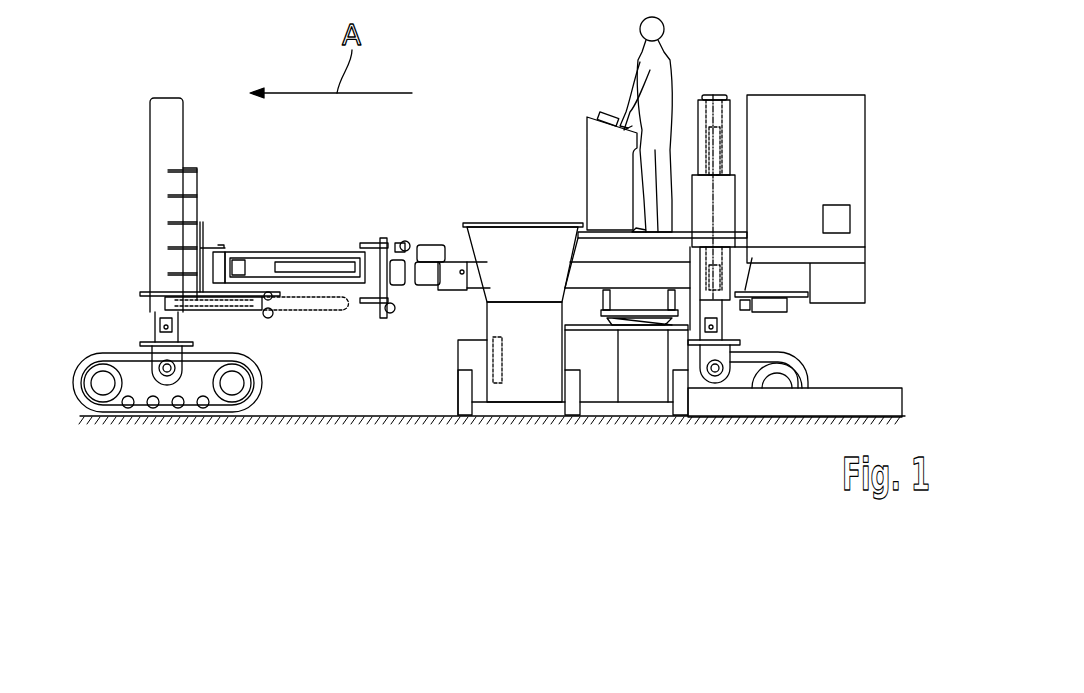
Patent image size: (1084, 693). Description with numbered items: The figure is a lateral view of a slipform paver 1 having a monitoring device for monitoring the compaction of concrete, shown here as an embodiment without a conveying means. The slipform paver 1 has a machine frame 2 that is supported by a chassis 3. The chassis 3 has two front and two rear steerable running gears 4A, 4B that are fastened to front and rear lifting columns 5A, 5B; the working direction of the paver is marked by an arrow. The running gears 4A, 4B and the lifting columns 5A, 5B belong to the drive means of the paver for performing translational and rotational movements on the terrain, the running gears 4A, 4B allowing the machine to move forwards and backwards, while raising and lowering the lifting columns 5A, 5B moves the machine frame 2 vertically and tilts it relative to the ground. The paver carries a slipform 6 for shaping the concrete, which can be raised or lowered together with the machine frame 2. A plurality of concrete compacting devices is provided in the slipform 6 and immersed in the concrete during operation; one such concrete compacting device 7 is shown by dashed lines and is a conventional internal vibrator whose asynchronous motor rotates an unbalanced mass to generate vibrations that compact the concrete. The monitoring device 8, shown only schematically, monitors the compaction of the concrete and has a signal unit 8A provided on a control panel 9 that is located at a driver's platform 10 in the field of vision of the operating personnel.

The slipform paver 1 is at (470, 108).
The machine frame 2 is at (679, 228).
The chassis 3 is at (92, 350).
The front steerable running gear 4A is at (262, 387).
The rear steerable running gear 4B is at (808, 386).
The front lifting column 5A is at (152, 150).
The rear lifting column 5B is at (730, 133).
The slipform 6 is at (517, 240).
The concrete compacting device 7 is at (500, 386).
The monitoring device 8 is at (852, 218).
The signal unit 8A is at (612, 111).
The control panel 9 is at (587, 143).
The driver's platform 10 is at (585, 96).